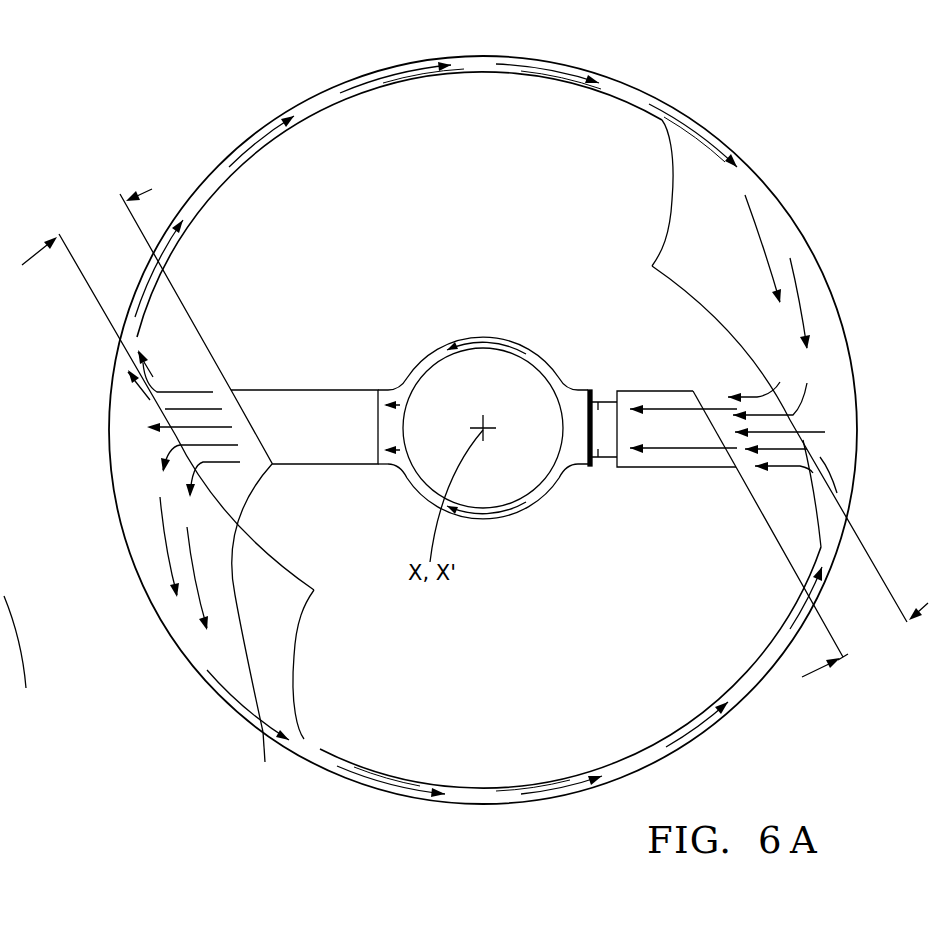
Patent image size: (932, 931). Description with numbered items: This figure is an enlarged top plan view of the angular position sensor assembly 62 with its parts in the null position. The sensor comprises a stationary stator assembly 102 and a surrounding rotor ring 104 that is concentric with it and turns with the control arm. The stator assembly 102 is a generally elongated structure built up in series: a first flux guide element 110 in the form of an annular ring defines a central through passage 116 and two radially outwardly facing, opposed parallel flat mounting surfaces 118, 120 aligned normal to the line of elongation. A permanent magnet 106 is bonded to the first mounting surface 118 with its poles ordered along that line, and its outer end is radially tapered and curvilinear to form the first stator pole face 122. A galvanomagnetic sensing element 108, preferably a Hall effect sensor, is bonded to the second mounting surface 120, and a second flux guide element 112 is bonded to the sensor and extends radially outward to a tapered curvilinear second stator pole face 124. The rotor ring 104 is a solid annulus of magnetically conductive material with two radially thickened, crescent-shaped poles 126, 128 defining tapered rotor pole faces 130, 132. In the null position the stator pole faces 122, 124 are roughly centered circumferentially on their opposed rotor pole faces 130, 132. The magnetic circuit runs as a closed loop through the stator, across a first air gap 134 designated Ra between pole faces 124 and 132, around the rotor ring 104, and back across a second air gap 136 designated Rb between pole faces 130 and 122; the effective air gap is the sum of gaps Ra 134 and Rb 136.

The angular position sensor assembly 62 is at (832, 165).
The stator assembly 102 is at (525, 516).
The rotor ring 104 is at (840, 303).
The permanent magnet 106 is at (310, 389).
The galvanomagnetic sensing element 108 is at (603, 460).
The first flux guide element 110 is at (519, 343).
The second flux guide element 112 is at (686, 467).
The central through passage 116 is at (463, 358).
The first mounting surface 118 is at (374, 466).
The second mounting surface 120 is at (592, 388).
The first stator pole face 122 is at (265, 760).
The second stator pole face 124 is at (702, 394).
The first rotor pole 126 is at (217, 643).
The second rotor pole 128 is at (740, 185).
The first rotor pole face 130 is at (283, 565).
The second rotor pole face 132 is at (672, 283).
The first air gap 134 is at (855, 652).
The second air gap 136 is at (116, 210).